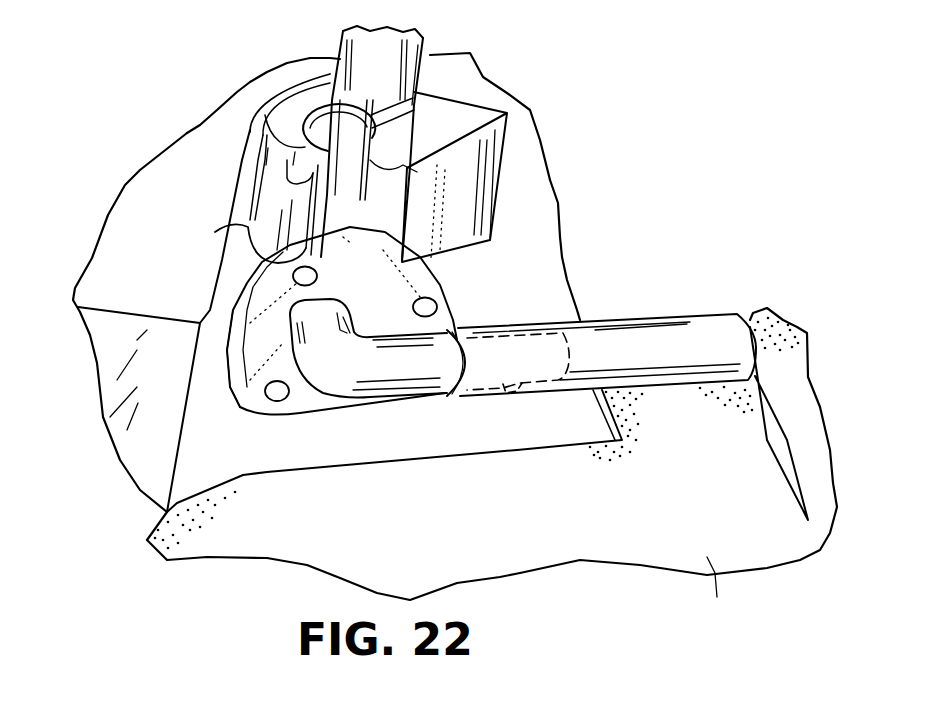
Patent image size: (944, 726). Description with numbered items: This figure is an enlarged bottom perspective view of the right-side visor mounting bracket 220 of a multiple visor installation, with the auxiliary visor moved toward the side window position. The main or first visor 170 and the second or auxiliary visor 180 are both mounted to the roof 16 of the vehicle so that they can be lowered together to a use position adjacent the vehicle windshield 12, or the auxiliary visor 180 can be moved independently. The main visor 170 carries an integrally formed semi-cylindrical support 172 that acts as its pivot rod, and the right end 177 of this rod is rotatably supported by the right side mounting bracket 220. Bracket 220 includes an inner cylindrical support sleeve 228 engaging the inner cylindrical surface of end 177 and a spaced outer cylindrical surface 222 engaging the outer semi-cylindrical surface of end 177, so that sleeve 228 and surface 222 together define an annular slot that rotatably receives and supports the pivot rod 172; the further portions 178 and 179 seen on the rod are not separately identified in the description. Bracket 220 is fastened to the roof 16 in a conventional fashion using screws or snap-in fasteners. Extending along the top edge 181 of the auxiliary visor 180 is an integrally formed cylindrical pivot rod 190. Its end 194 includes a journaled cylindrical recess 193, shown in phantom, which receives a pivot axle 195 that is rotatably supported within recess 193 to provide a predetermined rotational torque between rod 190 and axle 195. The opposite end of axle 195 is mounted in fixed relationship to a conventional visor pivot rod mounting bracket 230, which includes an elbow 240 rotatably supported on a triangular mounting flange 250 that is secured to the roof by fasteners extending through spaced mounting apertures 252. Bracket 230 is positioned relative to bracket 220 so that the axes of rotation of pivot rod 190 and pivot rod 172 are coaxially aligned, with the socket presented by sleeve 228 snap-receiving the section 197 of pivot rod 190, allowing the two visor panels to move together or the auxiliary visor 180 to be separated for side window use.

The vehicle windshield 12 is at (177, 375).
The vehicle roof 16 is at (540, 262).
The main visor 170 is at (118, 208).
The semi-cylindrical support 172 is at (425, 43).
The right end 177 is at (417, 172).
The tube portion 178 is at (397, 149).
The upper tube portion 179 is at (397, 85).
The auxiliary visor 180 is at (737, 587).
The top edge 181 is at (683, 387).
The cylindrical pivot rod 190 is at (740, 325).
The cylindrical recess 193 is at (508, 405).
The end of pivot rod 194 is at (660, 333).
The pivot axle 195 is at (377, 400).
The section of pivot rod 197 is at (463, 393).
The right side mounting bracket 220 is at (253, 220).
The outer cylindrical surface 222 is at (300, 114).
The inner cylindrical support sleeve 228 is at (311, 282).
The visor pivot rod mounting bracket 230 is at (243, 393).
The elbow 240 is at (333, 377).
The triangular mounting flange 250 is at (277, 413).
The mounting apertures 252 is at (413, 308).